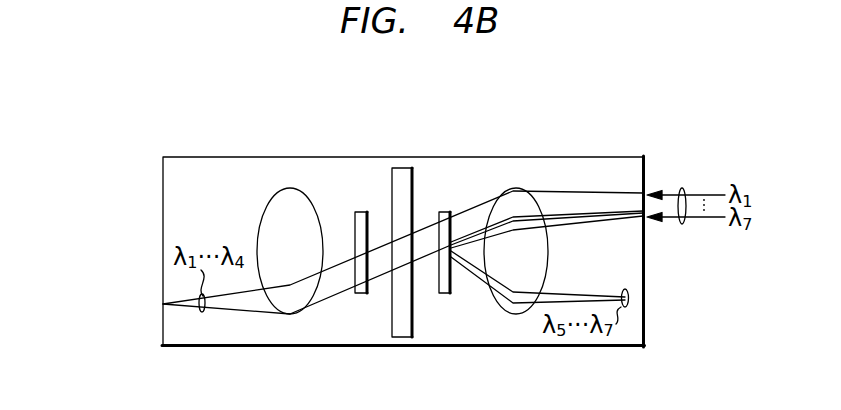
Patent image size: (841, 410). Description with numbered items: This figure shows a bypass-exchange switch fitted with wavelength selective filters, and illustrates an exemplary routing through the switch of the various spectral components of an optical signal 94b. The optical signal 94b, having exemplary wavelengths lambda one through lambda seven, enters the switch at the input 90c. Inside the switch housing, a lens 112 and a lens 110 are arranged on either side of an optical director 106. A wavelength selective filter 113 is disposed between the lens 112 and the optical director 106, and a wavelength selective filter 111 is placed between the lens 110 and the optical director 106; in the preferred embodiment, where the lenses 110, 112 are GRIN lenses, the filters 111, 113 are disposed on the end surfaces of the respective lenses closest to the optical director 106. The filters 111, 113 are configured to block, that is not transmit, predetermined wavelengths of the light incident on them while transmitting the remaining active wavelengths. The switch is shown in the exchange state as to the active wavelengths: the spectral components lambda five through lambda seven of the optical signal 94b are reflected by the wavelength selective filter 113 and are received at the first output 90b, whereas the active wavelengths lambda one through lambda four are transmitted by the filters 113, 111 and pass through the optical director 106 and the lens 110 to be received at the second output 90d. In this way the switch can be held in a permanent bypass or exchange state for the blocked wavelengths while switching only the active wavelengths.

The lens 110 is at (289, 190).
The wavelength selective filter 111 is at (359, 210).
The optical director 106 is at (405, 167).
The wavelength selective filter 113 is at (447, 210).
The lens 112 is at (516, 188).
The input 90c is at (647, 190).
The optical signal 94b is at (685, 188).
The first output 90b is at (650, 300).
The second output 90d is at (160, 303).